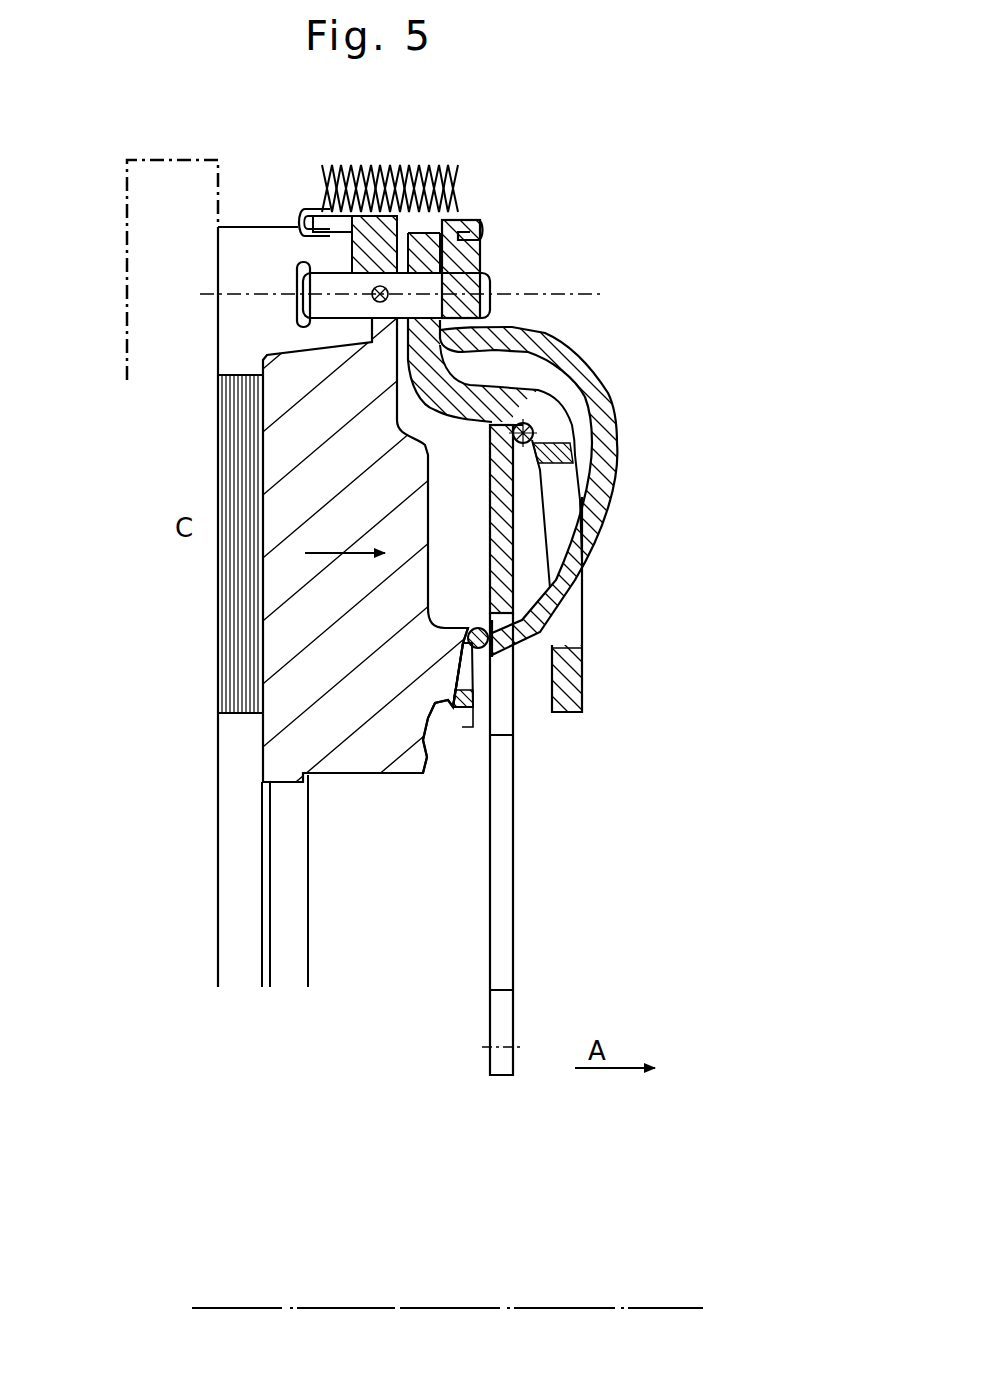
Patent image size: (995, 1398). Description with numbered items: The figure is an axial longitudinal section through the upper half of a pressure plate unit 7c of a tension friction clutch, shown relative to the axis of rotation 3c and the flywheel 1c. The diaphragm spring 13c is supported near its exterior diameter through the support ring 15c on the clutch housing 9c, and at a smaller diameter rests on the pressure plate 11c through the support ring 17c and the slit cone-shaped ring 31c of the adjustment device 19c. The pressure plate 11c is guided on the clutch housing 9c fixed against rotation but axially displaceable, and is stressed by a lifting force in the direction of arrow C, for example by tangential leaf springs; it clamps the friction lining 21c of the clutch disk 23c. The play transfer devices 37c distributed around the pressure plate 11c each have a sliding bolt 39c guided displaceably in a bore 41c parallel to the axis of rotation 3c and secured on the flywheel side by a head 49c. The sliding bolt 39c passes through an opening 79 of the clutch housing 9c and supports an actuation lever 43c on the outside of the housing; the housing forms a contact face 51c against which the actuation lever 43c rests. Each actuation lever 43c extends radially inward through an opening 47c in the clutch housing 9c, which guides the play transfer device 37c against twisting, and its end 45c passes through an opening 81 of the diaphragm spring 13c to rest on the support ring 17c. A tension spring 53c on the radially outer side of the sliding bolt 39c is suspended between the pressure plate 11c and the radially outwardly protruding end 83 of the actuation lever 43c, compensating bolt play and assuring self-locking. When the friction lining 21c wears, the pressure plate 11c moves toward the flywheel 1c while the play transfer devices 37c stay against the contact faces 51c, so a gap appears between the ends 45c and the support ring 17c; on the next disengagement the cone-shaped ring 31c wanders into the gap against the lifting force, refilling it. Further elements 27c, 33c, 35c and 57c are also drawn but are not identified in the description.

The flywheel 1c is at (126, 302).
The axis of rotation 3c is at (350, 1307).
The pressure plate unit 7c is at (657, 286).
The clutch housing 9c is at (578, 680).
The pressure plate 11c is at (292, 456).
The diaphragm spring 13c is at (512, 527).
The support ring 15c is at (534, 433).
The support ring 17c is at (474, 628).
The adjustment device 19c is at (448, 668).
The friction lining 21c is at (225, 595).
The clutch disk 23c is at (214, 815).
The actuating rod 27c is at (506, 920).
The slit cone-shaped ring 31c is at (407, 762).
The stop 33c is at (553, 650).
The wedge 35c is at (463, 716).
The play transfer device 37c is at (520, 226).
The sliding bolt 39c is at (445, 290).
The bore 41c is at (320, 210).
The actuation lever 43c is at (612, 436).
The end of actuation lever 45c is at (500, 632).
The opening 47c is at (556, 482).
The head 49c is at (297, 322).
The contact face 51c is at (545, 353).
The tension spring 53c is at (455, 163).
The pin 57c is at (378, 293).
The opening 79 is at (438, 338).
The opening 81 is at (505, 683).
The radially outwardly protruding end 83 is at (470, 247).